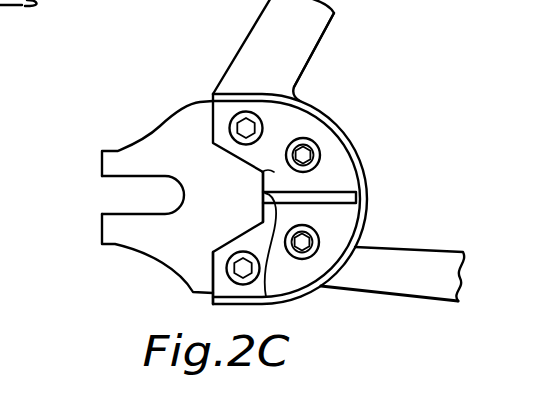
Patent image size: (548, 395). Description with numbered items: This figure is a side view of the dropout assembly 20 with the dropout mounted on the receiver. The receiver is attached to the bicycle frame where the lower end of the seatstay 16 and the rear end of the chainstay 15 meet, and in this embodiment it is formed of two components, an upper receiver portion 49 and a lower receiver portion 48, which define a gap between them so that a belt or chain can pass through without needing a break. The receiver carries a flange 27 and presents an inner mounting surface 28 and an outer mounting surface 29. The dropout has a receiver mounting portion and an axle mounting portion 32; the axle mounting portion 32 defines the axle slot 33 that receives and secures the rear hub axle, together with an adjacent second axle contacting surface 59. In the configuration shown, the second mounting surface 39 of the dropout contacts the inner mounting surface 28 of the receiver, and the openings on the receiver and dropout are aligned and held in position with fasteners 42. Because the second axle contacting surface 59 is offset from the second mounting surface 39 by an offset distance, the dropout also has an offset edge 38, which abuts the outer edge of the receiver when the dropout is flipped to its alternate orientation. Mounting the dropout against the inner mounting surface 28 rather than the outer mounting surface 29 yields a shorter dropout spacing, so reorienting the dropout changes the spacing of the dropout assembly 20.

The chainstay 15 is at (414, 247).
The seatstay 16 is at (322, 43).
The dropout assembly 20 is at (181, 80).
The flange 27 is at (327, 112).
The inner mounting surface 28 is at (275, 184).
The outer mounting surface 29 is at (222, 283).
The axle mounting portion 32 is at (168, 243).
The axle slot 33 is at (137, 197).
The offset edge 38 is at (263, 297).
The second mounting surface 39 is at (262, 172).
The fasteners 42 is at (305, 155).
The lower receiver portion 48 is at (336, 243).
The upper receiver portion 49 is at (280, 120).
The second axle contacting surface 59 is at (118, 157).